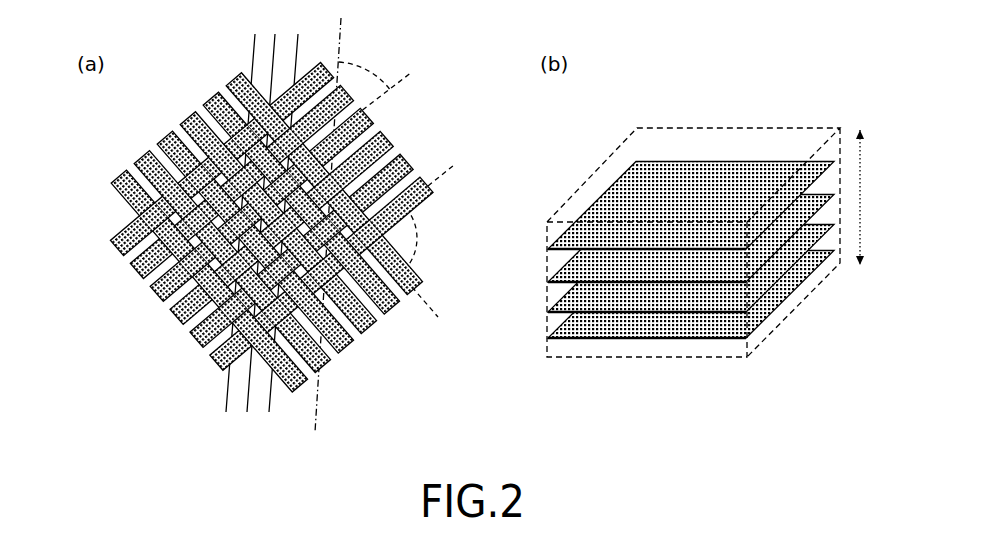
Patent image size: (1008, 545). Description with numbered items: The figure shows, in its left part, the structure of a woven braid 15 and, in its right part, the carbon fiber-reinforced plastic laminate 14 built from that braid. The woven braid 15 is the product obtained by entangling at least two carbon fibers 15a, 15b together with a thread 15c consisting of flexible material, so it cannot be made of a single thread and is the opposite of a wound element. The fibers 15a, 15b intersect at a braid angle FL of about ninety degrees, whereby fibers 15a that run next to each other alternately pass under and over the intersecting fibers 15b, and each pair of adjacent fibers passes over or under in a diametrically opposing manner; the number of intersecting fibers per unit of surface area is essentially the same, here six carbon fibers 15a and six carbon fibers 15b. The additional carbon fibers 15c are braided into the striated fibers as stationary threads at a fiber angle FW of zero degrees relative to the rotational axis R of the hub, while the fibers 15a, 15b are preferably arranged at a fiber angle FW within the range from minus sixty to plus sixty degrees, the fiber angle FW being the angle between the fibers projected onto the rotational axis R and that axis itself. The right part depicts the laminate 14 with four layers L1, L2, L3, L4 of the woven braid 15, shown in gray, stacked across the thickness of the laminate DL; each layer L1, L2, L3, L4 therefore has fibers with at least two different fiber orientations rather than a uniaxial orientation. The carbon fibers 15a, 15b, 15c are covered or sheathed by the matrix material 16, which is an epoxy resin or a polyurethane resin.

The carbon fiber-reinforced plastic laminate 14 is at (684, 228).
The woven braid 15 is at (270, 224).
The carbon fibers 15a is at (216, 363).
The carbon fibers 15b is at (300, 386).
The stationary threads 15c is at (292, 45).
The matrix material 16 is at (778, 142).
The woven braid layer L1 is at (673, 195).
The woven braid layer L2 is at (650, 267).
The woven braid layer L3 is at (708, 298).
The woven braid layer L4 is at (658, 327).
The rotational axis R is at (343, 33).
The fiber angle FW is at (362, 85).
The braid angle FL is at (402, 236).
The thickness of the laminate DL is at (864, 185).